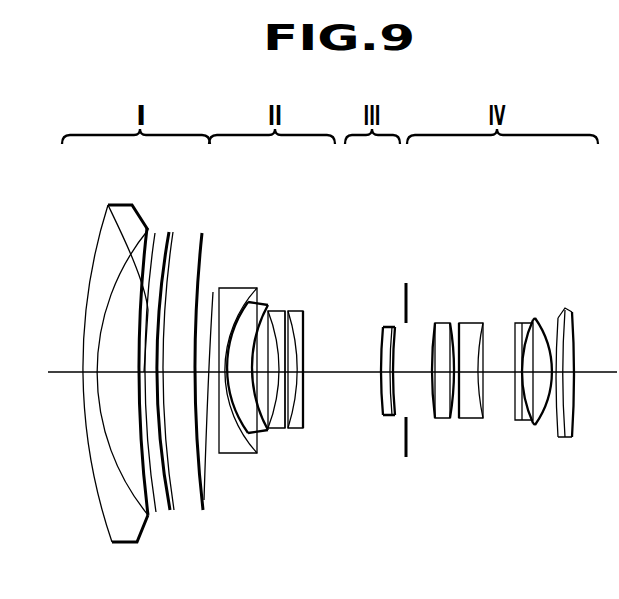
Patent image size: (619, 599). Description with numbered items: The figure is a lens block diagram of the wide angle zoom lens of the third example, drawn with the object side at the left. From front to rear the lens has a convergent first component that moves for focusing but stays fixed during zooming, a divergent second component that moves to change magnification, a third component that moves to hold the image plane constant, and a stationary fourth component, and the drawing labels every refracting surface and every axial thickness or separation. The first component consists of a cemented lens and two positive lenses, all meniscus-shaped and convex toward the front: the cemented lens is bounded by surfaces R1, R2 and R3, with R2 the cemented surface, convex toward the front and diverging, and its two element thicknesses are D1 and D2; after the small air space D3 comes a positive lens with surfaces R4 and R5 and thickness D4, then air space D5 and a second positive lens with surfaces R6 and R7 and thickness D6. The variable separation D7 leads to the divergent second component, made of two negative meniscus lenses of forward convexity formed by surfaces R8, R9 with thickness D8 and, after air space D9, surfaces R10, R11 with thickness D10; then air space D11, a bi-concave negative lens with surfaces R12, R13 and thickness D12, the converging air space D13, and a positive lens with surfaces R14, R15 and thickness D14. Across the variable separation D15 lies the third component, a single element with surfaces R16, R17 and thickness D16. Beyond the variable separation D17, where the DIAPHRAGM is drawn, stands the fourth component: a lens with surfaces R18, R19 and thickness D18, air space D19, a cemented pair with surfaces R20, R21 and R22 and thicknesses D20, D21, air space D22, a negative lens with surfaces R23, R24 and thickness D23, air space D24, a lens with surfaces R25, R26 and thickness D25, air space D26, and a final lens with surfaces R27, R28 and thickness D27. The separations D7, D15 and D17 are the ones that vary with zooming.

The first lens surface R1 is at (89, 268).
The second lens surface R2 is at (108, 204).
The third lens surface R3 is at (119, 204).
The fourth lens surface R4 is at (152, 232).
The fifth lens surface R5 is at (168, 231).
The sixth lens surface R6 is at (173, 231).
The seventh lens surface R7 is at (202, 232).
The eighth lens surface R8 is at (219, 288).
The ninth lens surface R9 is at (255, 289).
The tenth lens surface R10 is at (246, 300).
The eleventh lens surface R11 is at (267, 304).
The twelfth lens surface R12 is at (268, 310).
The thirteenth lens surface R13 is at (285, 310).
The fourteenth lens surface R14 is at (303, 310).
The fifteenth lens surface R15 is at (304, 310).
The sixteenth lens surface R16 is at (384, 326).
The seventeenth lens surface R17 is at (395, 326).
The eighteenth lens surface R18 is at (435, 322).
The nineteenth lens surface R19 is at (449, 322).
The twentieth lens surface R20 is at (459, 322).
The twenty-first lens surface R21 is at (481, 322).
The twenty-second lens surface R22 is at (516, 322).
The twenty-third lens surface R23 is at (530, 322).
The twenty-fourth lens surface R24 is at (533, 319).
The twenty-fifth lens surface R25 is at (536, 317).
The twenty-sixth lens surface R26 is at (558, 317).
The twenty-seventh lens surface R27 is at (565, 309).
The twenty-eighth lens surface R28 is at (573, 311).
The axial thickness of first element D1 is at (90, 373).
The axial thickness of second element D2 is at (113, 373).
The axial air separation D3 is at (152, 507).
The axial thickness of third element D4 is at (168, 520).
The axial air separation D5 is at (183, 512).
The axial thickness of fourth element D6 is at (177, 373).
The variable axial separation D7 is at (205, 465).
The axial thickness of fifth element D8 is at (232, 457).
The axial air separation D9 is at (242, 453).
The axial thickness of sixth element D10 is at (255, 453).
The axial air separation D11 is at (268, 440).
The axial thickness of seventh element D12 is at (282, 440).
The axial air separation D13 is at (293, 430).
The axial thickness of eighth element D14 is at (303, 429).
The variable axial separation D15 is at (345, 373).
The axial thickness of ninth element D16 is at (388, 418).
The variable axial separation D17 is at (415, 373).
The axial thickness of tenth element D18 is at (442, 420).
The axial air separation D19 is at (452, 420).
The axial thickness of eleventh element D20 is at (468, 420).
The axial thickness of twelfth element D21 is at (480, 420).
The axial air separation D22 is at (497, 377).
The axial thickness of thirteenth element D23 is at (527, 420).
The axial air separation D24 is at (537, 425).
The axial thickness of fourteenth element D25 is at (555, 425).
The axial air separation D26 is at (572, 438).
The axial thickness of fifteenth element D27 is at (580, 428).
The diaphragm (aperture stop) DIAPHRAGM is at (407, 458).